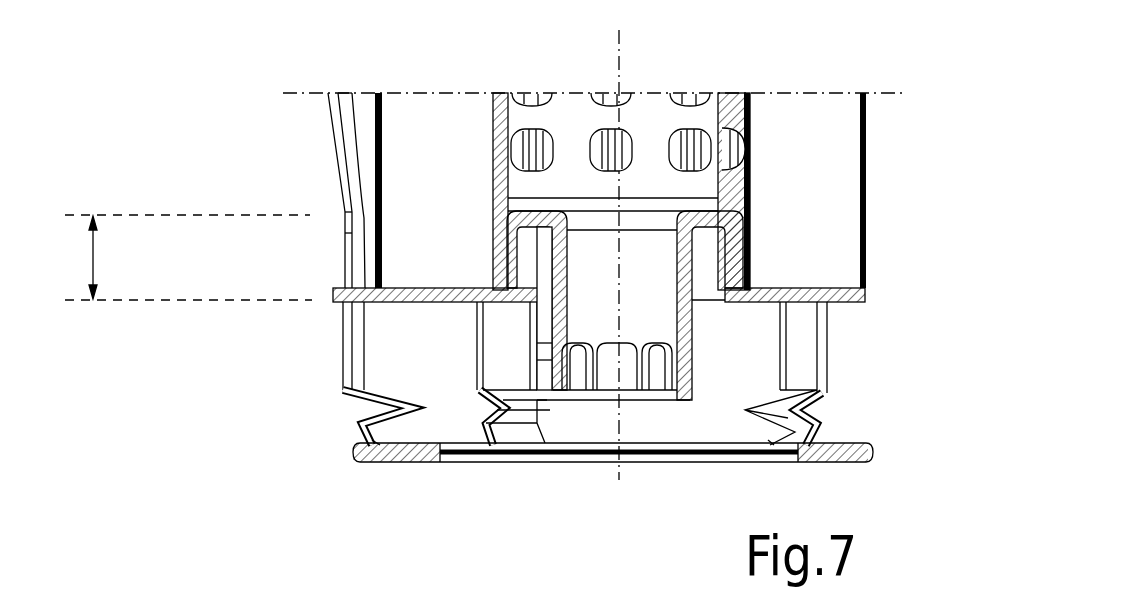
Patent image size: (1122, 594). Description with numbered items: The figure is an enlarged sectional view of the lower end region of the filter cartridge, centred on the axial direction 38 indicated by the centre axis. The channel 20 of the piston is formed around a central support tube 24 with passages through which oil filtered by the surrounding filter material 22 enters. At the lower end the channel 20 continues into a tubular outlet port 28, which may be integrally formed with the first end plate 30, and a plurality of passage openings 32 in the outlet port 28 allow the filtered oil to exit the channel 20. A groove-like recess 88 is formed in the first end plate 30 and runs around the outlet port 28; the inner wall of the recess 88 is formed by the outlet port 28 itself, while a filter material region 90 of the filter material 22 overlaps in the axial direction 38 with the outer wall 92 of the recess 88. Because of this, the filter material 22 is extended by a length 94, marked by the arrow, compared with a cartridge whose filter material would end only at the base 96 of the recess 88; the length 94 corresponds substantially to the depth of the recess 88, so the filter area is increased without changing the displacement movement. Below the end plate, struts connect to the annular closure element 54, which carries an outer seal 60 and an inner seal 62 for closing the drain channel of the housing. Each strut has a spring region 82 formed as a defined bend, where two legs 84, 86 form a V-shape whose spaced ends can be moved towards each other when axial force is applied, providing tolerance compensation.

The channel 20 is at (563, 117).
The filter material 22 is at (823, 175).
The central support tube 24 is at (527, 112).
The tubular outlet port 28 is at (583, 320).
The first end plate 30 is at (868, 297).
The passage openings 32 is at (660, 362).
The axial direction 38 is at (620, 70).
The annular closure element 54 is at (843, 460).
The outer seal 60 is at (351, 458).
The inner seal 62 is at (462, 463).
The spring region 82 is at (392, 389).
The leg 84 is at (377, 403).
The leg 86 is at (396, 424).
The groove-like recess 88 is at (707, 262).
The filter material region 90 is at (407, 257).
The outer wall 92 is at (505, 262).
The length 94 is at (93, 258).
The base 96 is at (747, 153).